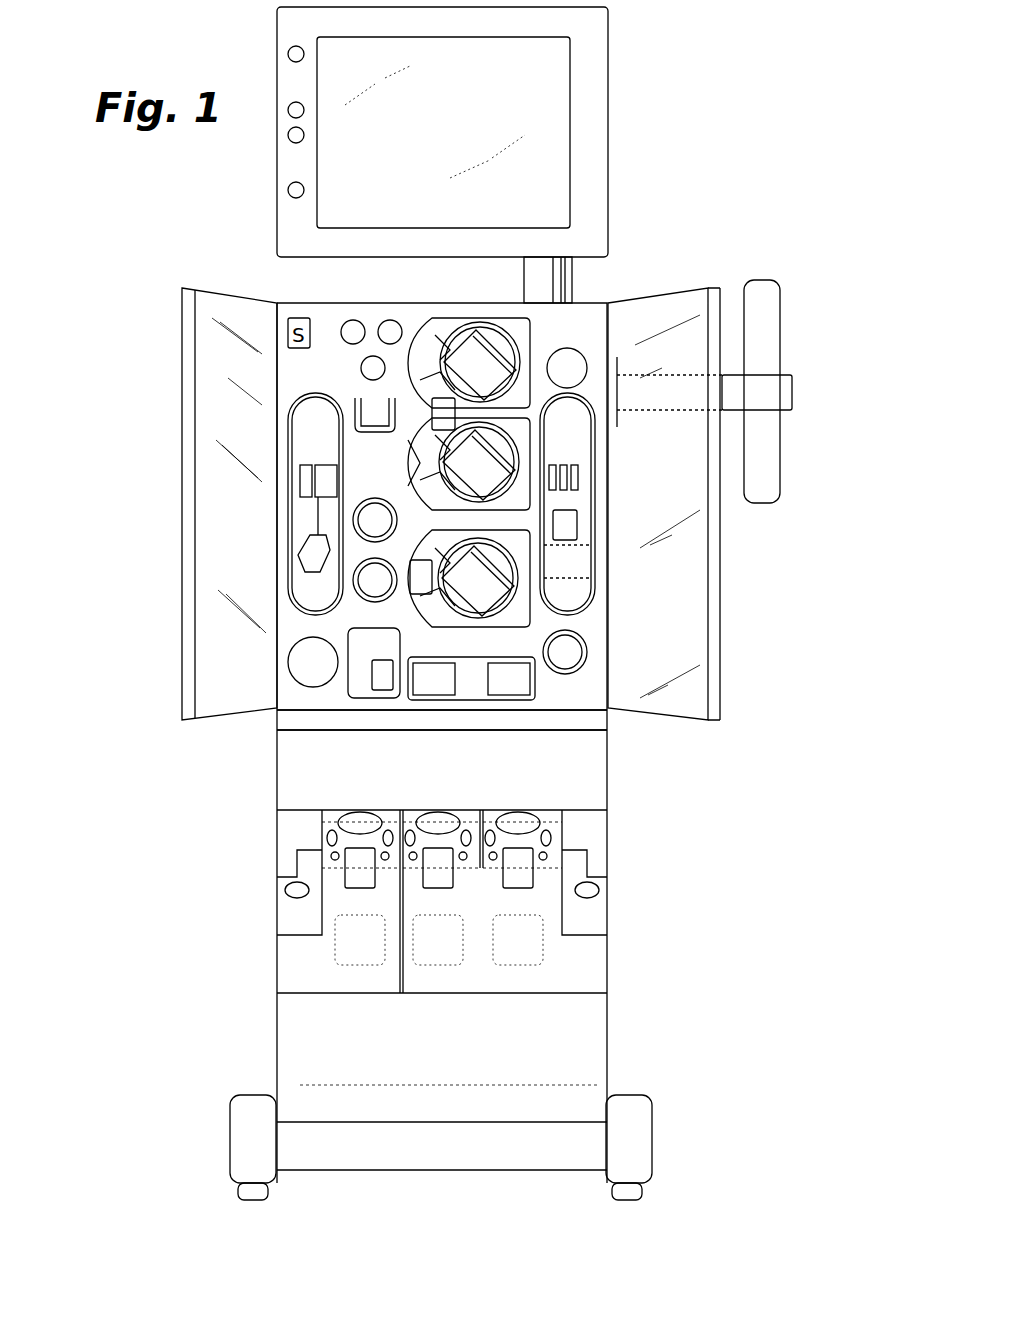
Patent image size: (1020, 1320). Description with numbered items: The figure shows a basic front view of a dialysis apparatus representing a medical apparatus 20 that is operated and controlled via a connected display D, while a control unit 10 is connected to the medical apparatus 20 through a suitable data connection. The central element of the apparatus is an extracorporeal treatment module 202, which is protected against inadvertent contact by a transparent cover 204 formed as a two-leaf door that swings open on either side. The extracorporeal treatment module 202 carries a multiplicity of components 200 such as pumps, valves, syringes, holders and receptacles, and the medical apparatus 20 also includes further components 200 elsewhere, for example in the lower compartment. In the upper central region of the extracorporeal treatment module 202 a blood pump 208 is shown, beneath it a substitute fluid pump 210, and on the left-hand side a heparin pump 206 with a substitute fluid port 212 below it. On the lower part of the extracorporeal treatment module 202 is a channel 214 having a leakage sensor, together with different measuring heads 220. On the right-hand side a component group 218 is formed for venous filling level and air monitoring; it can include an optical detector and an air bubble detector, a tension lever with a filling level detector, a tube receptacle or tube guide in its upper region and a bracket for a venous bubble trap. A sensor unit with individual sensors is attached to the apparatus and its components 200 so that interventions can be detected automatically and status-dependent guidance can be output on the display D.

The display D is at (555, 95).
The control unit 10 is at (302, 300).
The medical apparatus 20 is at (148, 537).
The components 200 is at (520, 400).
The extracorporeal treatment module 202 is at (250, 418).
The transparent cover 204 is at (212, 672).
The heparin pump 206 is at (297, 477).
The blood pump 208 is at (416, 462).
The substitute fluid pump 210 is at (460, 600).
The substitute fluid port 212 is at (313, 687).
The channel 214 is at (597, 720).
The component group 218 is at (602, 576).
The measuring heads 220 is at (433, 700).